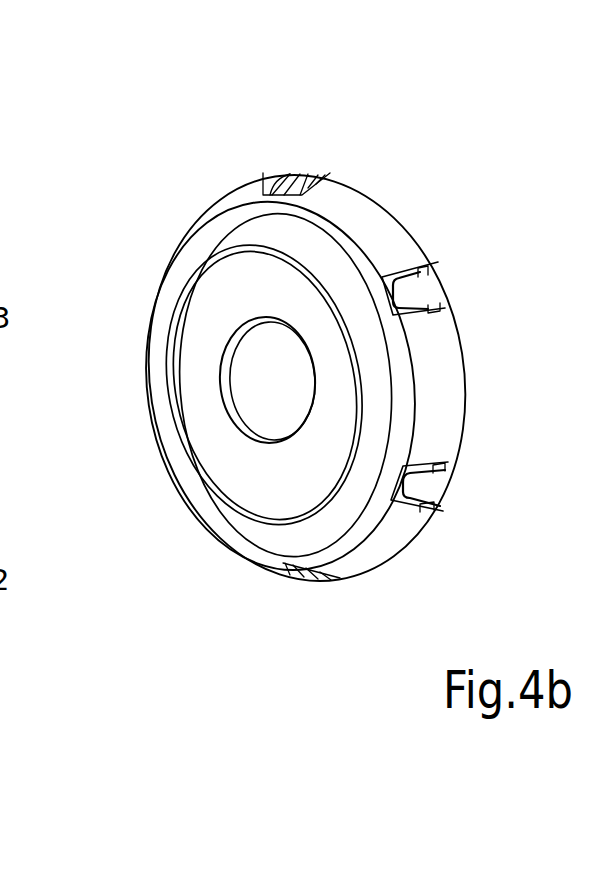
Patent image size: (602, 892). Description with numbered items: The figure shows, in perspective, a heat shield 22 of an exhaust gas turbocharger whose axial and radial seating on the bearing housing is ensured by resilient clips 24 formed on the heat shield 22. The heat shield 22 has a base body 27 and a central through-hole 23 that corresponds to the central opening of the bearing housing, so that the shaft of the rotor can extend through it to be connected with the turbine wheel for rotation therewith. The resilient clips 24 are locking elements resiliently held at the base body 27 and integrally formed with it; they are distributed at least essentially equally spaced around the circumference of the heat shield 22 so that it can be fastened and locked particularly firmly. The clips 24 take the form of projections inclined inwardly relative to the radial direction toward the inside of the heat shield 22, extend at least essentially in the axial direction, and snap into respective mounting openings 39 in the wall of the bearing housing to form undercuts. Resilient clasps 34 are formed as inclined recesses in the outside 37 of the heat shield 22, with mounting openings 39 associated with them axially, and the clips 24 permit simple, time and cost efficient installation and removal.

The heat shield 22 is at (305, 383).
The through-hole 23 is at (281, 398).
The clips 24 is at (307, 171).
The base body 27 is at (224, 282).
The resilient clasps 34 is at (392, 634).
The outside 37 is at (366, 204).
The mounting openings 39 is at (406, 274).